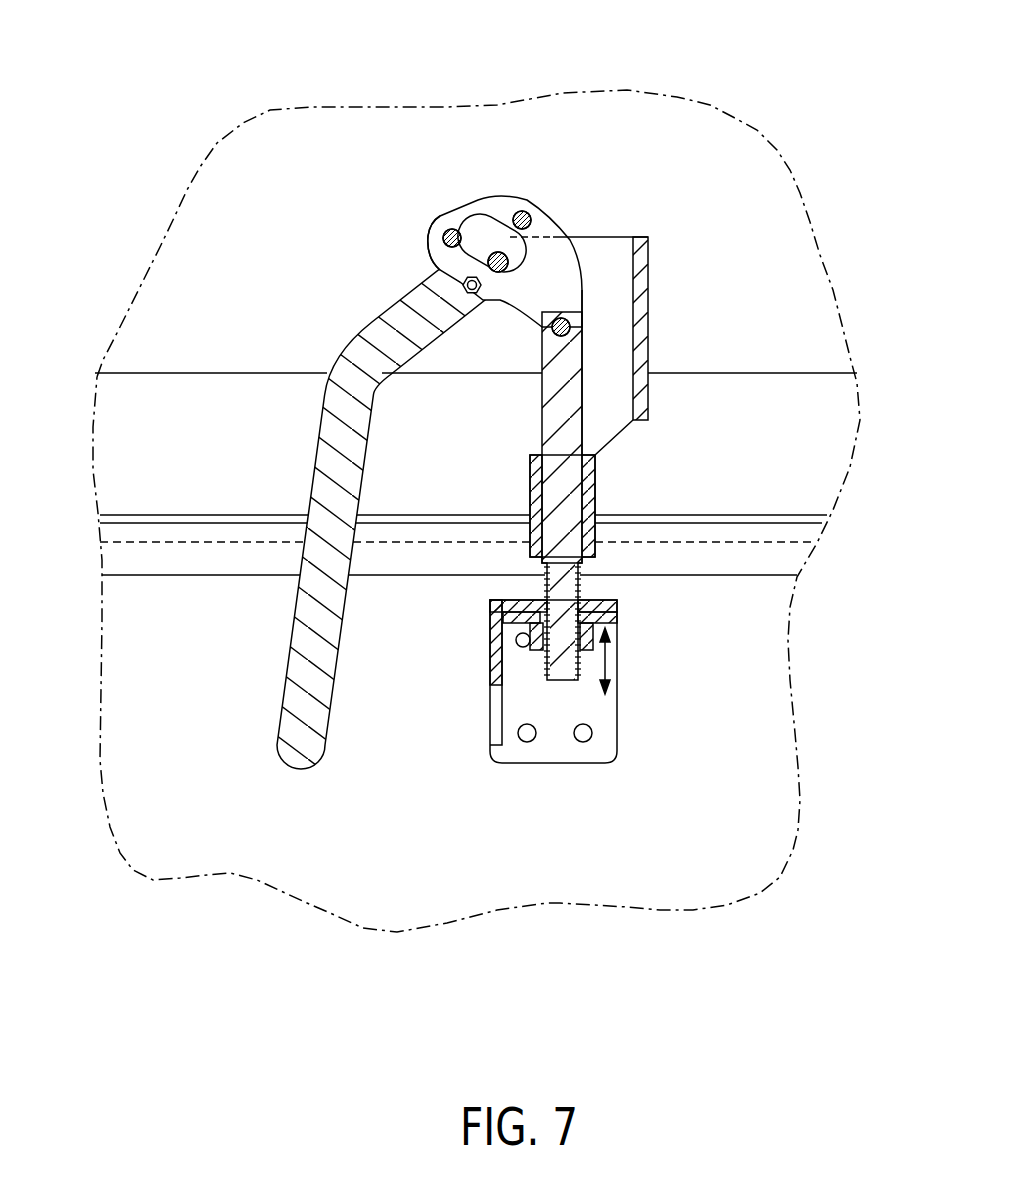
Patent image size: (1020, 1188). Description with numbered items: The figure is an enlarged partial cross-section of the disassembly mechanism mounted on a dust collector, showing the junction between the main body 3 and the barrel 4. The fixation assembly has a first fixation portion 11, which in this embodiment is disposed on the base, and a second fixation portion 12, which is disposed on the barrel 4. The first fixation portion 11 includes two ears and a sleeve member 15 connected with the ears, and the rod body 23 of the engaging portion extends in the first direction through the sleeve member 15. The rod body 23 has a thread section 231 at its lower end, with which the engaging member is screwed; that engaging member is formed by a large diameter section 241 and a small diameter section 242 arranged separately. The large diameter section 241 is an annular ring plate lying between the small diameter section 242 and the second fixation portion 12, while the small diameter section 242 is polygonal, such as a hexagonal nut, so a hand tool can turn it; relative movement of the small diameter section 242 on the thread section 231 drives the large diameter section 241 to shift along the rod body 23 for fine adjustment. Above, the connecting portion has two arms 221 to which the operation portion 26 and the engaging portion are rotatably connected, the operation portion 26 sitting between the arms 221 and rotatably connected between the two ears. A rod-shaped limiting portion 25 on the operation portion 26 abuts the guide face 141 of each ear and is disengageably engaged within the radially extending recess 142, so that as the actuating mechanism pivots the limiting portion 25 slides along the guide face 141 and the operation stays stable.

The main body 3 is at (810, 412).
The barrel 4 is at (745, 685).
The first fixation portion 11 is at (643, 273).
The second fixation portion 12 is at (495, 652).
The sleeve member 15 is at (600, 497).
The rod body 23 is at (570, 383).
The limiting portion 25 is at (441, 271).
The operation portion 26 is at (340, 430).
The guide face 141 is at (460, 215).
The recess 142 is at (481, 298).
The arm 221 is at (498, 200).
The thread section 231 is at (547, 660).
The large diameter section 241 is at (617, 617).
The small diameter section 242 is at (587, 650).